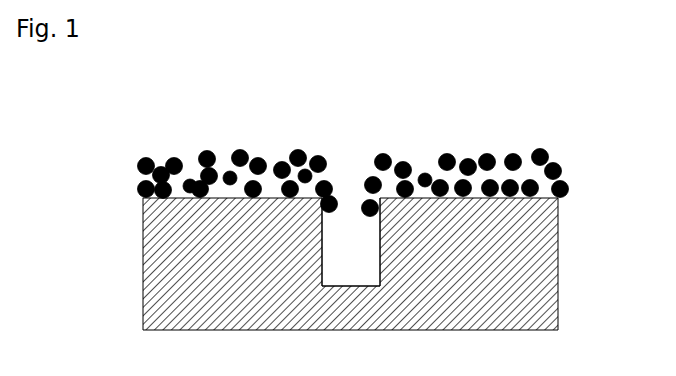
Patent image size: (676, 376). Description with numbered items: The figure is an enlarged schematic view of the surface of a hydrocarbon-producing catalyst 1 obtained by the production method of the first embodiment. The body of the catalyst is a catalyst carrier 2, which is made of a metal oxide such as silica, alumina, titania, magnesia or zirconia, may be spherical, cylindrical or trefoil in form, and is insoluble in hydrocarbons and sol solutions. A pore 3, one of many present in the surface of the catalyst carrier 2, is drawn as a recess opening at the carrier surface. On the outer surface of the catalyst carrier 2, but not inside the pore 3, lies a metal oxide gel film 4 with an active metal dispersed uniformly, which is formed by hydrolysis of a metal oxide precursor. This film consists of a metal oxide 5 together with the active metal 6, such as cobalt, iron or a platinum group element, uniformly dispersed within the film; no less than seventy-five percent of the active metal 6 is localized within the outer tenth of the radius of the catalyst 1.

The hydrocarbon-producing catalyst 1 is at (467, 95).
The catalyst carrier 2 is at (558, 261).
The pore 3 is at (347, 280).
The metal oxide gel film with an active metal dispersed uniformly 4 is at (376, 154).
The metal oxide 5 is at (247, 156).
The active metal 6 is at (306, 156).